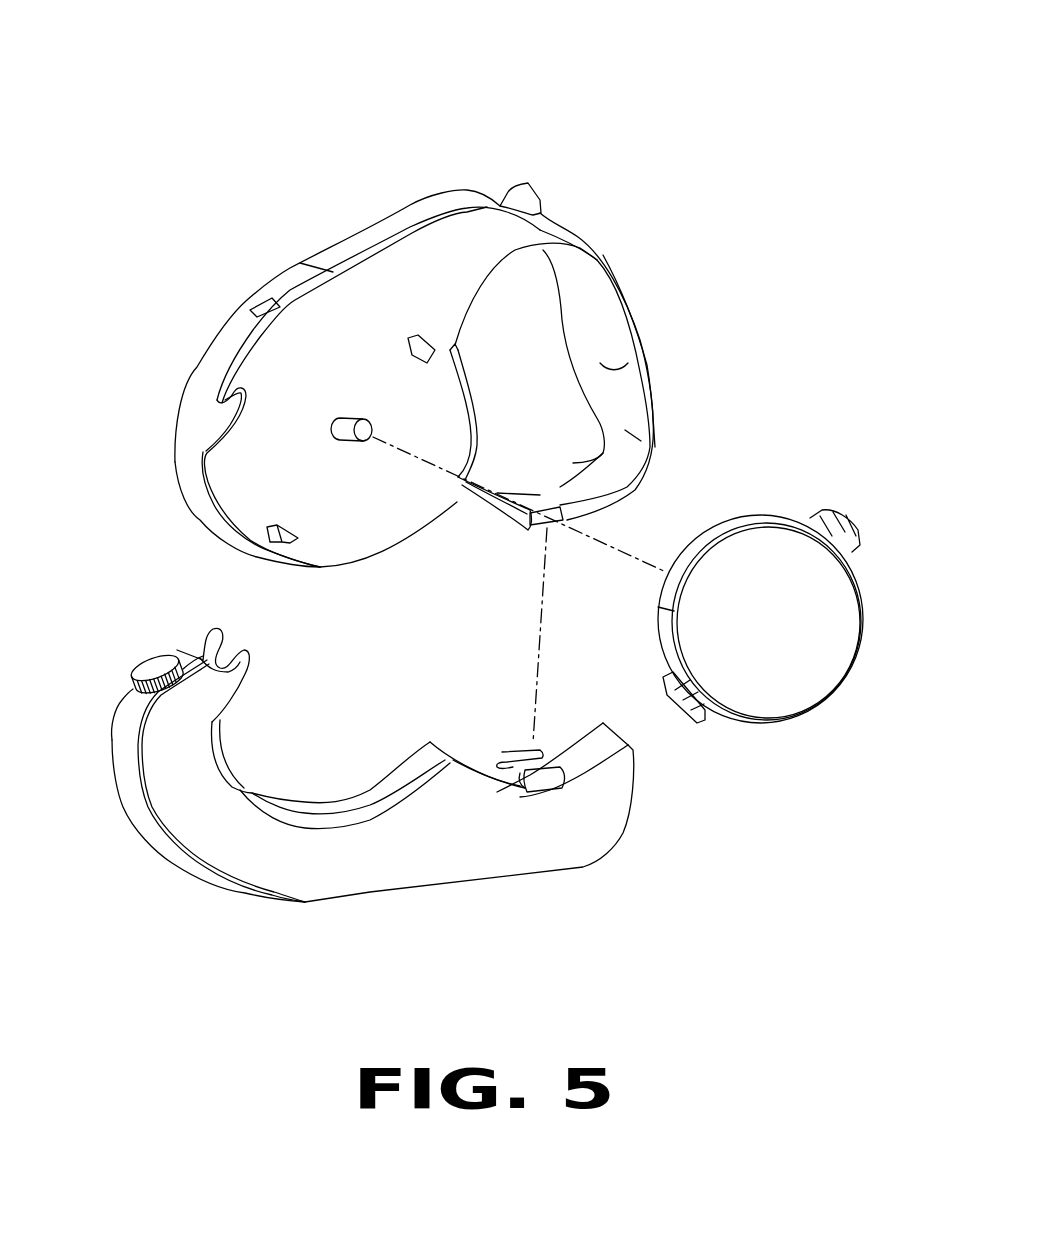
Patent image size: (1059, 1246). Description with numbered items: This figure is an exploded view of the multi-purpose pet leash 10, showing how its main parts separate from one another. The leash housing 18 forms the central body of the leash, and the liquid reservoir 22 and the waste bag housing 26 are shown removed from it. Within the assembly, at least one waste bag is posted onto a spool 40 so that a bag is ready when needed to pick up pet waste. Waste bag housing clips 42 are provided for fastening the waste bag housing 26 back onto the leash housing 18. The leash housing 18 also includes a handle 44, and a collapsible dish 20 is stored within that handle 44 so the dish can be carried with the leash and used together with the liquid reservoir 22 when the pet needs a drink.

The multi-purpose pet leash 10 is at (610, 101).
The leash housing 18 is at (430, 208).
The collapsible dish 20 is at (650, 443).
The liquid reservoir 22 is at (355, 877).
The waste bag housing 26 is at (785, 672).
The spool 40 is at (347, 437).
The waste bag housing clips 42 is at (277, 525).
The handle 44 is at (583, 282).